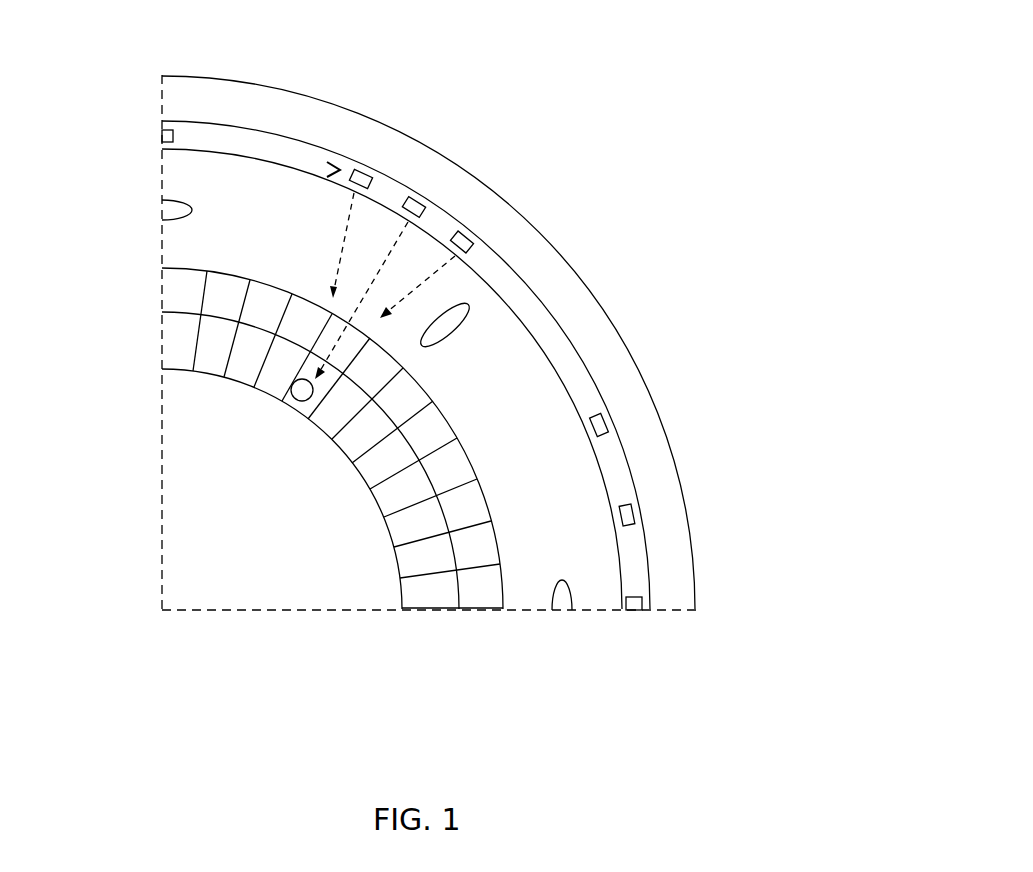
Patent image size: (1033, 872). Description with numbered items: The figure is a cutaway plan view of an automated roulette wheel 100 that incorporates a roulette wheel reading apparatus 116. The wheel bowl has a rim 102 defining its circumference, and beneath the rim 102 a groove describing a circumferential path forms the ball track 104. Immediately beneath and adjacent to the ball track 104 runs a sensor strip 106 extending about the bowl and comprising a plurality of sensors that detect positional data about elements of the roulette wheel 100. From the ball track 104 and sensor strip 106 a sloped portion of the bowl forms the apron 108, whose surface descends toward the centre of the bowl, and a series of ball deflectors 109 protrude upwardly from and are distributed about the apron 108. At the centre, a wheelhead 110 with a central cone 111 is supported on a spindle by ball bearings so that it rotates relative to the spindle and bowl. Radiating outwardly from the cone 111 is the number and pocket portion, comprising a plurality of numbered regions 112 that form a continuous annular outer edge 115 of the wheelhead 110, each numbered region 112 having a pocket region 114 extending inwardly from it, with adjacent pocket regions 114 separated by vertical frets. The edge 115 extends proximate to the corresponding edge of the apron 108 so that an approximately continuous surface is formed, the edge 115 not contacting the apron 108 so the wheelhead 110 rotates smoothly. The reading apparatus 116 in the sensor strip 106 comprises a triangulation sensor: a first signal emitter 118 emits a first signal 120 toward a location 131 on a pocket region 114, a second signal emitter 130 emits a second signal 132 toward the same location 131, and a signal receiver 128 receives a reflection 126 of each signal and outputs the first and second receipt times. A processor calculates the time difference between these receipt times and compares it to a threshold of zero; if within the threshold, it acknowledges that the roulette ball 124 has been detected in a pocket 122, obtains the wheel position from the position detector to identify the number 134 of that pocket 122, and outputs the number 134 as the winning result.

The roulette wheel 100 is at (606, 72).
The rim 102 is at (677, 530).
The ball track 104 is at (650, 603).
The sensor strip 106 is at (192, 133).
The apron 108 is at (580, 542).
The ball deflectors 109 is at (437, 267).
The wheelhead 110 is at (179, 583).
The central cone 111 is at (254, 527).
The numbered regions 112 is at (490, 597).
The pocket region 114 is at (274, 474).
The outer edge 115 is at (503, 594).
The roulette wheel reading apparatus 116 is at (338, 170).
The first signal emitter 118 is at (360, 174).
The first signal 120 is at (343, 237).
The pocket 122 is at (312, 373).
The roulette ball 124 is at (275, 392).
The reflection 126 is at (388, 260).
The signal receiver 128 is at (414, 203).
The second signal emitter 130 is at (477, 238).
The location 131 is at (313, 380).
The second signal 132 is at (465, 322).
The number 134 is at (313, 347).